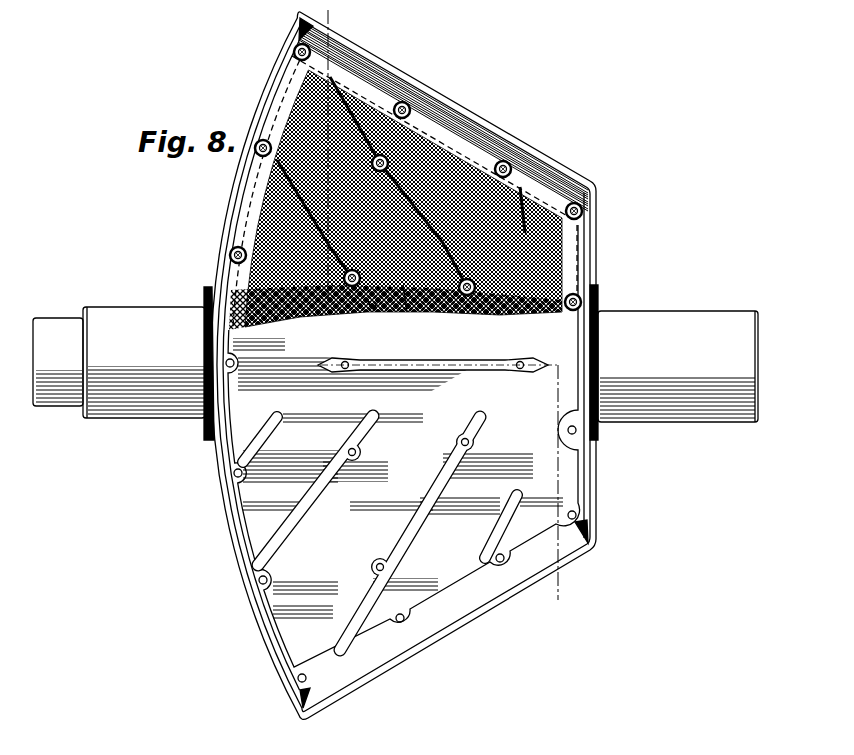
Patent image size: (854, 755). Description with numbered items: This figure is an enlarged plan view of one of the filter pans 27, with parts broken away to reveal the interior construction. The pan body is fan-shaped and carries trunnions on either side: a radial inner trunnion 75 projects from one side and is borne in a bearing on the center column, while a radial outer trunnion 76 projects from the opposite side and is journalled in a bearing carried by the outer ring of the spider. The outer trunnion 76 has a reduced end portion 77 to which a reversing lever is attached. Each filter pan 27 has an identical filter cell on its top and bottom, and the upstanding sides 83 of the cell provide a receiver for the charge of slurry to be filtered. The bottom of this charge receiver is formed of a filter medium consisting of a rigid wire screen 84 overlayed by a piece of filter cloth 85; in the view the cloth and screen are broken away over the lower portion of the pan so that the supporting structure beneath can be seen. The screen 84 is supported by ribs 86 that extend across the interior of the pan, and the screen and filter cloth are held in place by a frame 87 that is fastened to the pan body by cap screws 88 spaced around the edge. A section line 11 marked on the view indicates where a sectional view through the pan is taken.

The section line 11- 11 is at (547, 583).
The filter pan 27 is at (508, 134).
The radial inner trunnion 75 is at (687, 312).
The radial outer trunnion 76 is at (152, 312).
The reduced end portion 77 is at (57, 318).
The upstanding sides 83 is at (430, 89).
The rigid wire screen 84 is at (409, 312).
The filter cloth 85 is at (378, 310).
The ribs 86 is at (346, 450).
The frame 87 is at (571, 311).
The cap screws 88 is at (583, 214).